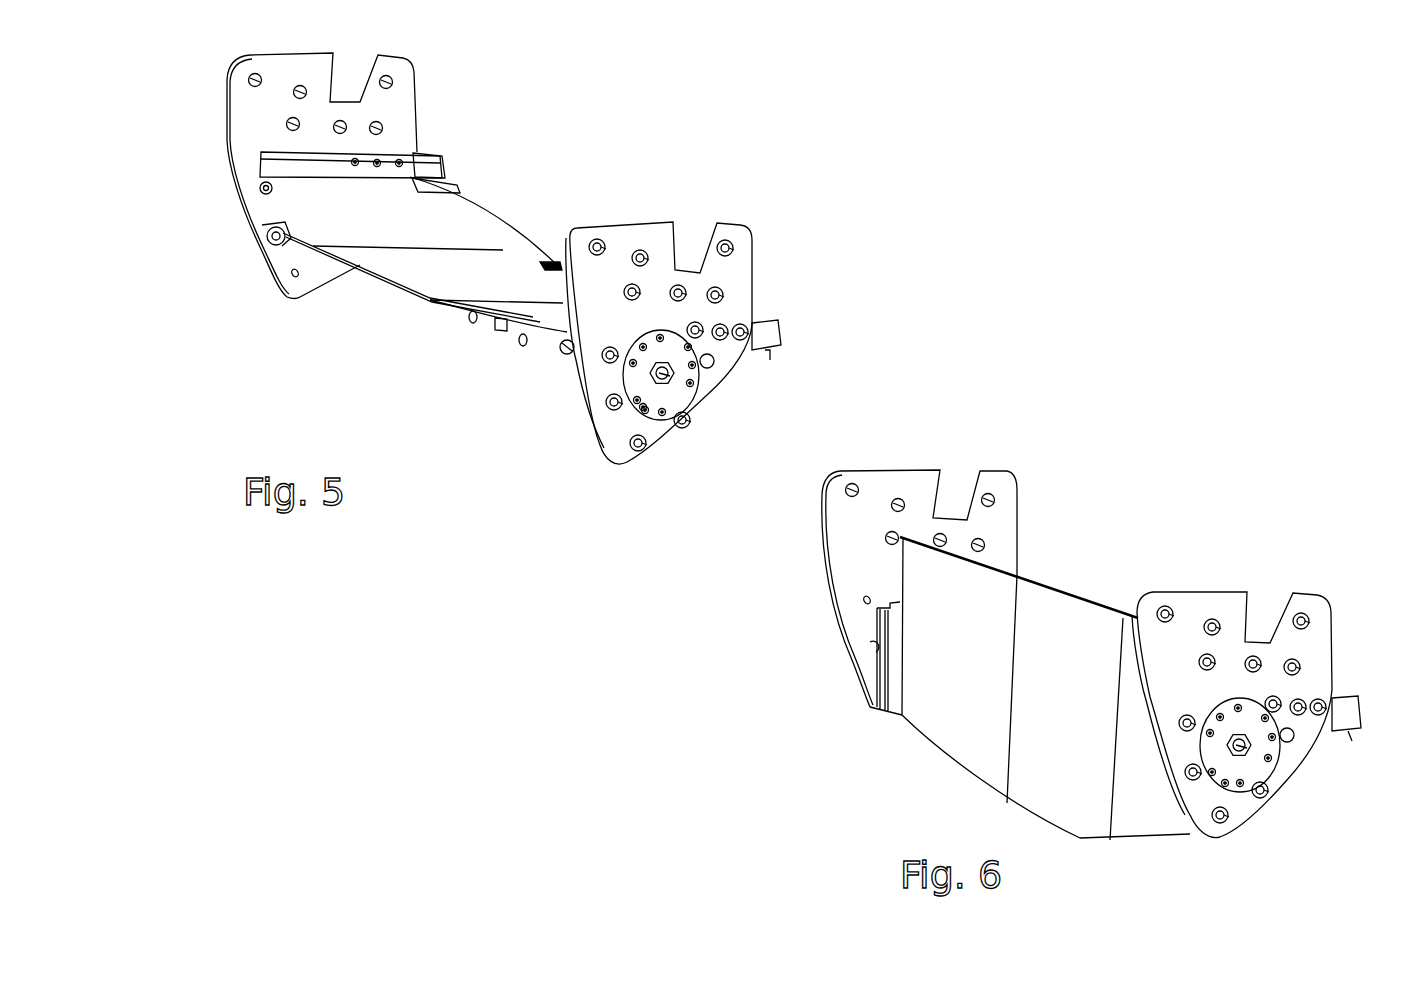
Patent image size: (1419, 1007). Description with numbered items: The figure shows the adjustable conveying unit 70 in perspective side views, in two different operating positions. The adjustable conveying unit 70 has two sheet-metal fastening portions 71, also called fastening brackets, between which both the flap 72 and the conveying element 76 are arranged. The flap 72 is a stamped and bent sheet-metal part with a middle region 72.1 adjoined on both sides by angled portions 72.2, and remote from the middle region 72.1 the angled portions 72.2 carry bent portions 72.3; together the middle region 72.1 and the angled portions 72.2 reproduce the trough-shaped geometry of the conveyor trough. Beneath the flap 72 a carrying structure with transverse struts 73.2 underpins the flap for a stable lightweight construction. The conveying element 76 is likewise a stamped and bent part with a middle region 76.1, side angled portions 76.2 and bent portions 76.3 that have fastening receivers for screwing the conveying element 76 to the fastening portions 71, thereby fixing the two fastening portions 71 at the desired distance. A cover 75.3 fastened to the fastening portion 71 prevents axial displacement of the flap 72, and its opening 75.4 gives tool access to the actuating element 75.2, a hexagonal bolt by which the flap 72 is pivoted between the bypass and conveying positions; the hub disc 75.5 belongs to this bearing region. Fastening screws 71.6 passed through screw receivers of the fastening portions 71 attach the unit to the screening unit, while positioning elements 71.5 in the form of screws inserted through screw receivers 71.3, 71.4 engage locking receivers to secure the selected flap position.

In FIG. 5, the adjustable conveying unit 70 is at (372, 302).
In FIG. 6, the adjustable conveying unit 70 is at (1045, 455).
In FIG. 5, the fastening portion 71 is at (402, 83).
In FIG. 6, the fastening portion 71 is at (1000, 515).
In FIG. 5, the screw receiver 71.3 is at (613, 402).
In FIG. 6, the screw receiver 71.3 is at (1190, 775).
In FIG. 5, the screw receiver 71.4 is at (680, 420).
In FIG. 6, the screw receiver 71.4 is at (1263, 792).
In FIG. 5, the positioning element 71.5 is at (610, 355).
In FIG. 6, the positioning element 71.5 is at (1187, 725).
In FIG. 5, the fastening screw 71.6 is at (723, 293).
In FIG. 6, the fastening screw 71.6 is at (1300, 617).
In FIG. 5, the flap 72 is at (462, 226).
In FIG. 6, the flap 72 is at (1068, 575).
In FIG. 5, the middle region 72.1 is at (527, 262).
In FIG. 6, the middle region 72.1 is at (1098, 617).
In FIG. 5, the angled portion 72.2 is at (423, 208).
In FIG. 6, the angled portion 72.2 is at (1002, 575).
In FIG. 5, the bent portion 72.3 is at (273, 155).
In FIG. 6, the bent portion 72.3 is at (868, 695).
In FIG. 5, the transverse strut 73.2 is at (513, 347).
In FIG. 5, the actuating element 75.2 is at (667, 377).
In FIG. 6, the actuating element 75.2 is at (1250, 747).
In FIG. 5, the cover 75.3 is at (710, 350).
In FIG. 6, the cover 75.3 is at (1260, 767).
In FIG. 5, the opening 75.4 is at (643, 407).
In FIG. 6, the opening 75.4 is at (1233, 755).
In FIG. 5, the hub disc 75.5 is at (660, 380).
In FIG. 6, the hub disc 75.5 is at (1223, 783).
In FIG. 5, the conveying element 76 is at (785, 320).
In FIG. 6, the conveying element 76 is at (1345, 678).
In FIG. 5, the middle region 76.1 is at (553, 265).
In FIG. 5, the angled portion 76.2 is at (500, 230).
In FIG. 5, the bent portion 76.3 is at (427, 163).
In FIG. 6, the bent portion 76.3 is at (1346, 718).